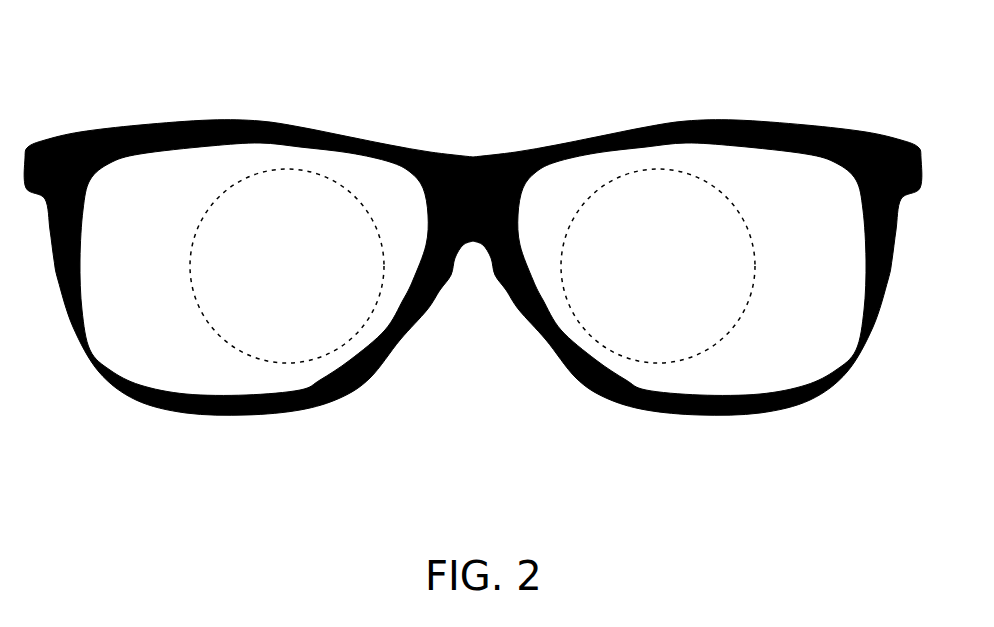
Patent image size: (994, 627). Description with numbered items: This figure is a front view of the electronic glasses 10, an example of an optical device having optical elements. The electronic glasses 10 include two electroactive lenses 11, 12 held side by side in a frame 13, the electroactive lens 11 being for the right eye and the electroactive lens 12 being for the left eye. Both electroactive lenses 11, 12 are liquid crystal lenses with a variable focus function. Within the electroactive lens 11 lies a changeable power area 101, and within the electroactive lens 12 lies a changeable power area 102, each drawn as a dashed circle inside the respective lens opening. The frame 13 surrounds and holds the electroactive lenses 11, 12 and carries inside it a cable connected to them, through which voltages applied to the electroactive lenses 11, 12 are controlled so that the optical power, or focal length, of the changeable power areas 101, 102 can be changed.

The electronic glasses 10 is at (80, 61).
The electroactive lens 11 is at (388, 186).
The electroactive lens 12 is at (554, 186).
The frame 13 is at (840, 128).
The changeable power area 101 is at (296, 362).
The changeable power area 102 is at (650, 365).